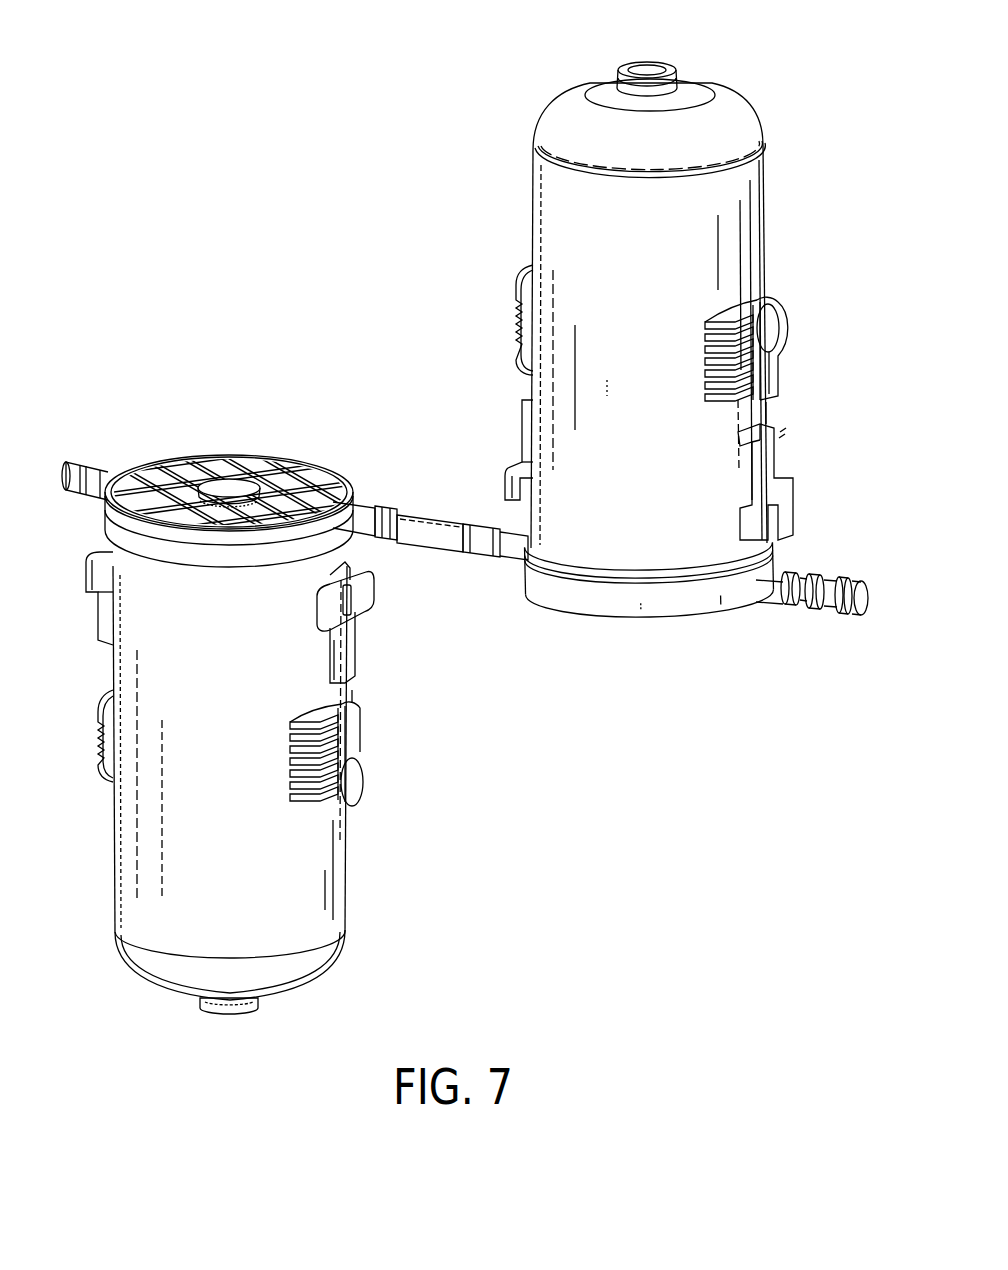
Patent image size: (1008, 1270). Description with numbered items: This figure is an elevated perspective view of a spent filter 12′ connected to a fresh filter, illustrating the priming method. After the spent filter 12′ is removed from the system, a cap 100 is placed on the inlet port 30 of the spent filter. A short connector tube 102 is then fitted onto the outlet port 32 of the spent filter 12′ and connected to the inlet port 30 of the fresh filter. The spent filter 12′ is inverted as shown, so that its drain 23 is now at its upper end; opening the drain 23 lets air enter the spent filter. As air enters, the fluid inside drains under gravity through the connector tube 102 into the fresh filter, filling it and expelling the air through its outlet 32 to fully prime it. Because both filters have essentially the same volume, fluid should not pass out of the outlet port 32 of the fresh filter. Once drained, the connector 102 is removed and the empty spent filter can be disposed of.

The spent filter 12′ is at (752, 215).
The drain 23 is at (640, 62).
The inlet port 30 is at (362, 510).
The outlet port 32 is at (106, 476).
The cap 100 is at (836, 622).
The connector tube 102 is at (428, 545).